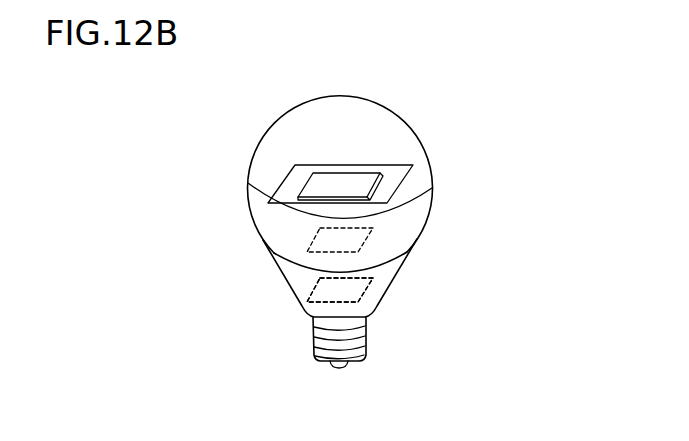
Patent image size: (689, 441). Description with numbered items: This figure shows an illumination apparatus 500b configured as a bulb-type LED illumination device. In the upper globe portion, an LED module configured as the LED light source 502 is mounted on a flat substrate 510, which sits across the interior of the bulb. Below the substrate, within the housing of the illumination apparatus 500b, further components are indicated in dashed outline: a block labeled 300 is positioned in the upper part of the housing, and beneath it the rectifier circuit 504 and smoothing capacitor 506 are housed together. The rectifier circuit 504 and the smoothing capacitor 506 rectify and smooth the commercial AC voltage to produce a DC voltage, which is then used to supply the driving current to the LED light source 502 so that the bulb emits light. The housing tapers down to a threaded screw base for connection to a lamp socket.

The illumination apparatus 500b is at (368, 413).
The substrate 510 is at (392, 177).
The LED light source 502 is at (352, 182).
The sensor module 300 is at (348, 241).
The rectifier circuit 504 is at (348, 291).
The smoothing capacitor 506 is at (340, 290).